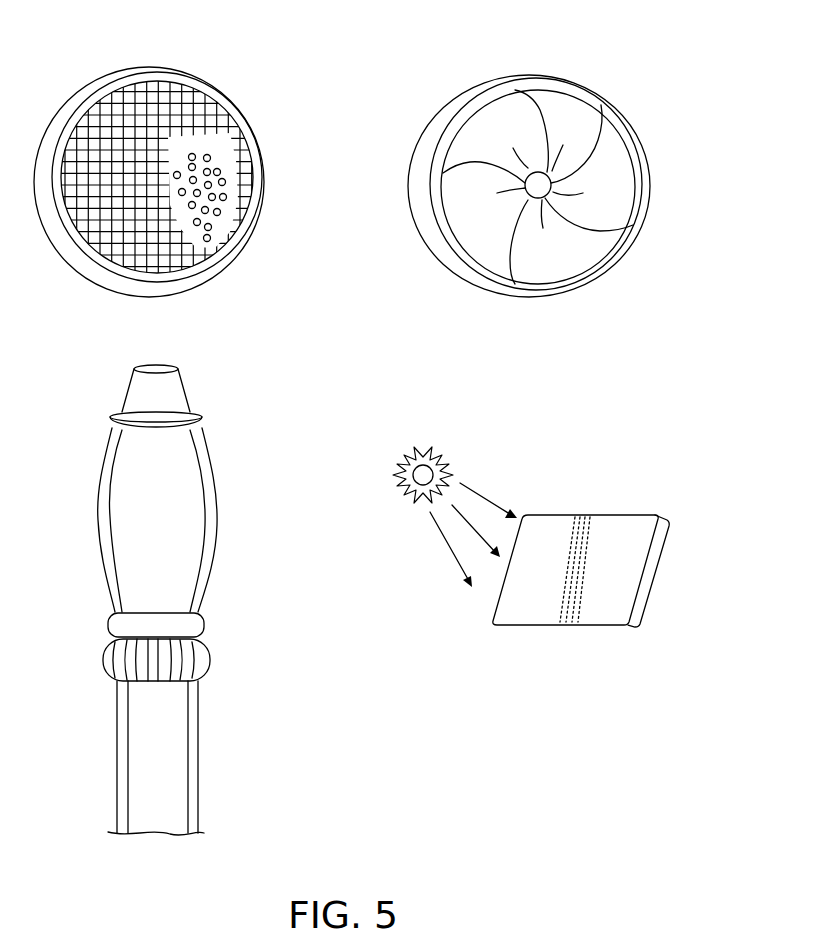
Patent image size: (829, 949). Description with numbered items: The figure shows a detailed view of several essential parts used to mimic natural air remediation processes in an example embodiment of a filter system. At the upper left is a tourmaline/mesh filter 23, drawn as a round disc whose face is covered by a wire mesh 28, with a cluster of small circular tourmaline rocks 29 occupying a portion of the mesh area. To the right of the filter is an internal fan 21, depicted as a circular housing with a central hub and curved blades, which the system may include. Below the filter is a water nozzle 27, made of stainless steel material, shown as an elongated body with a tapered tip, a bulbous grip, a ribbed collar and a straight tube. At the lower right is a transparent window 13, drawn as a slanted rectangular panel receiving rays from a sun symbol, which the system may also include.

The transparent window 13 is at (657, 537).
The internal fan 21 is at (538, 73).
The tourmaline/mesh filter 23 is at (168, 72).
The water nozzle 27 is at (203, 453).
The wire mesh 28 is at (102, 107).
The tourmaline rocks 29 is at (205, 139).